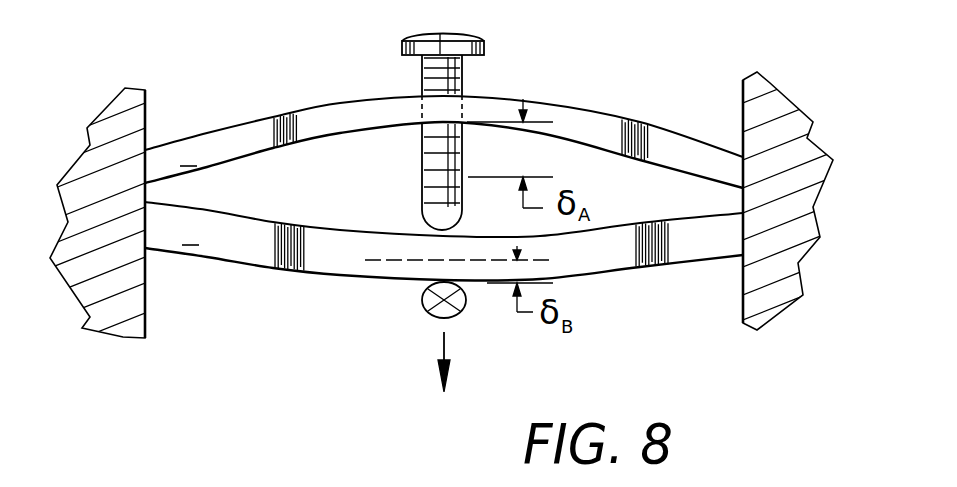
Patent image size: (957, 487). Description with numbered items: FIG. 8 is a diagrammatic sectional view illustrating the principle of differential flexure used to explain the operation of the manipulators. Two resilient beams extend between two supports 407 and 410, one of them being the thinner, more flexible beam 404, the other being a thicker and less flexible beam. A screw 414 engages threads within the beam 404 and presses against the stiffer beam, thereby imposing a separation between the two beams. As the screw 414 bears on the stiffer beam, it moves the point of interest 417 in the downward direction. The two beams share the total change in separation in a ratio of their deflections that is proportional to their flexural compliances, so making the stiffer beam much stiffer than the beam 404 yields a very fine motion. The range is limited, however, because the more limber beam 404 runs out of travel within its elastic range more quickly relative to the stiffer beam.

The resilient beam 404 is at (592, 122).
The support 407 is at (145, 115).
The support 410 is at (742, 127).
The screw 414 is at (462, 75).
The point of interest 417 is at (435, 316).